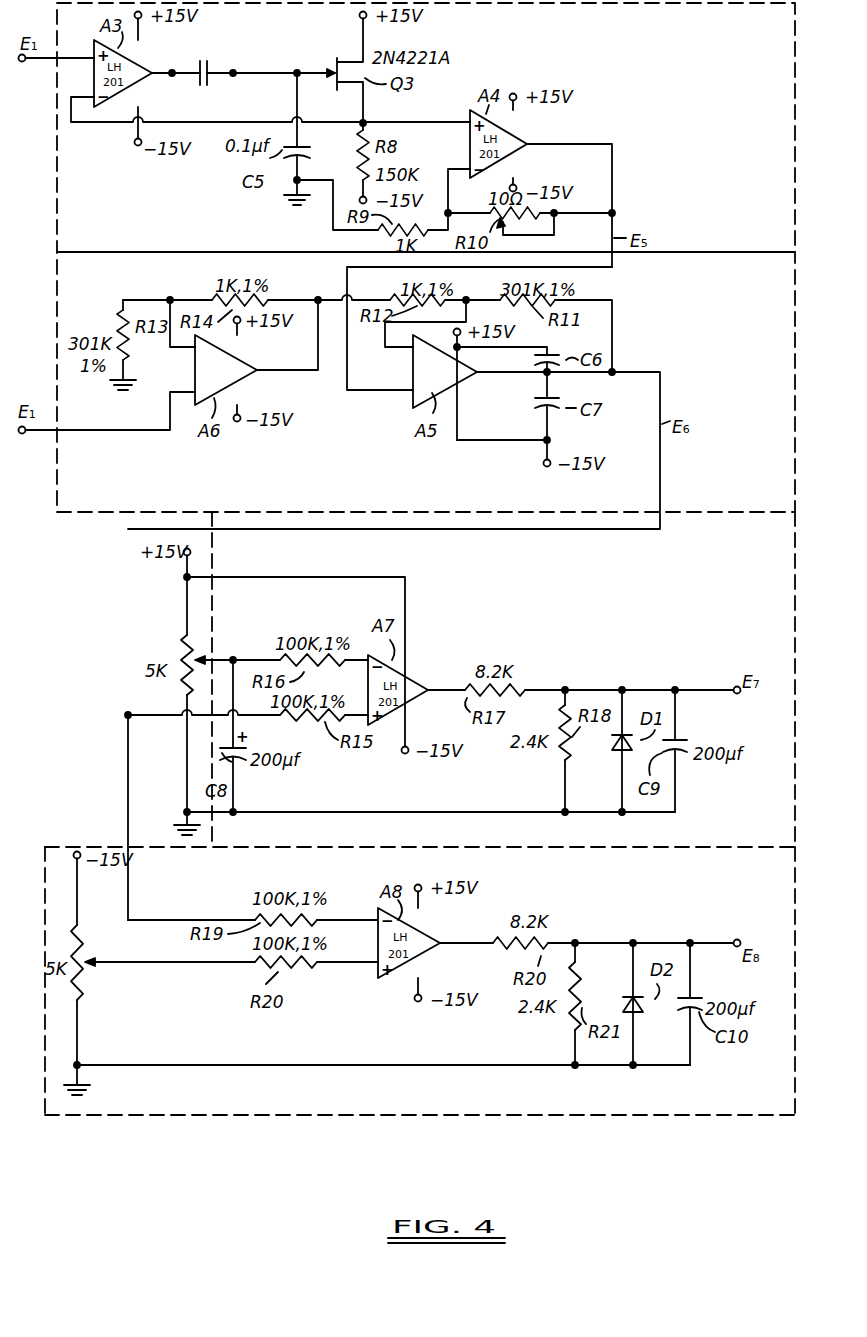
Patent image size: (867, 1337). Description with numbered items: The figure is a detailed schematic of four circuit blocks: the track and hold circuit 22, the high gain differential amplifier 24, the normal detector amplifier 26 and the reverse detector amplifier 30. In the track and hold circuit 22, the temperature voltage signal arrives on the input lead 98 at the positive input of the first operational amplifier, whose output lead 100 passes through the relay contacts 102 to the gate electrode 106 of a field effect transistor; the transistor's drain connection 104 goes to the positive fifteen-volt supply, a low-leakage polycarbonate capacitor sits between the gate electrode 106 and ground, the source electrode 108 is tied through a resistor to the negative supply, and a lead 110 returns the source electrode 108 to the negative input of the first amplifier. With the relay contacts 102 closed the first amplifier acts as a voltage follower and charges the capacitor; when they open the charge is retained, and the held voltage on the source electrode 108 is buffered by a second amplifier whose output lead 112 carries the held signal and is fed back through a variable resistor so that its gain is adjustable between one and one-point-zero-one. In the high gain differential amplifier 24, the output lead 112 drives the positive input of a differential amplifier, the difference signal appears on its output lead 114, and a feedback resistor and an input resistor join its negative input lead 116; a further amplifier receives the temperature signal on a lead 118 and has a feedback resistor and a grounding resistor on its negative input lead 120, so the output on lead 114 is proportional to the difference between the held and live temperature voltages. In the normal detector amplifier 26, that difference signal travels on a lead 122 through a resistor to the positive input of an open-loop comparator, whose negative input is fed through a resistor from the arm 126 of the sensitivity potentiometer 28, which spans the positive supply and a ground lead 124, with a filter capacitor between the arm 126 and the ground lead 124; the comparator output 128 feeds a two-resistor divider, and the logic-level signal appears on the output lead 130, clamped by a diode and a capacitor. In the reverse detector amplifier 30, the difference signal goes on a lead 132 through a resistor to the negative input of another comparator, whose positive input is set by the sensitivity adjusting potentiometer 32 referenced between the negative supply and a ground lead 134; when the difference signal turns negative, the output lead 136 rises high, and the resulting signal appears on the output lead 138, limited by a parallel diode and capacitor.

The track and hold circuit 22 is at (426, 127).
The high gain differential amplifier 24 is at (426, 382).
The normal detector amplifier 26 is at (420, 679).
The potentiometer 28 is at (183, 650).
The reverse detector amplifier 30 is at (420, 981).
The sensitivity adjusting potentiometer 32 is at (85, 983).
The input lead 98 is at (47, 68).
The output lead 100 is at (170, 68).
The relay contacts 102 is at (208, 58).
The drain lead of transistor Q3 104 is at (362, 32).
The gate electrode 106 is at (315, 70).
The source electrode 108 is at (362, 108).
The lead 110 is at (210, 121).
The output lead 112 is at (582, 148).
The output lead 114 is at (483, 372).
The negative input lead 116 is at (380, 336).
The lead 118 is at (110, 432).
The negative input lead 120 is at (182, 352).
The lead 122 is at (157, 720).
The ground lead 124 is at (462, 806).
The arm 126 is at (254, 659).
The output 128 is at (445, 688).
The output lead 130 is at (600, 690).
The lead 132 is at (130, 822).
The ground lead 134 is at (255, 1065).
The output lead 136 is at (458, 946).
The output lead 138 is at (593, 947).